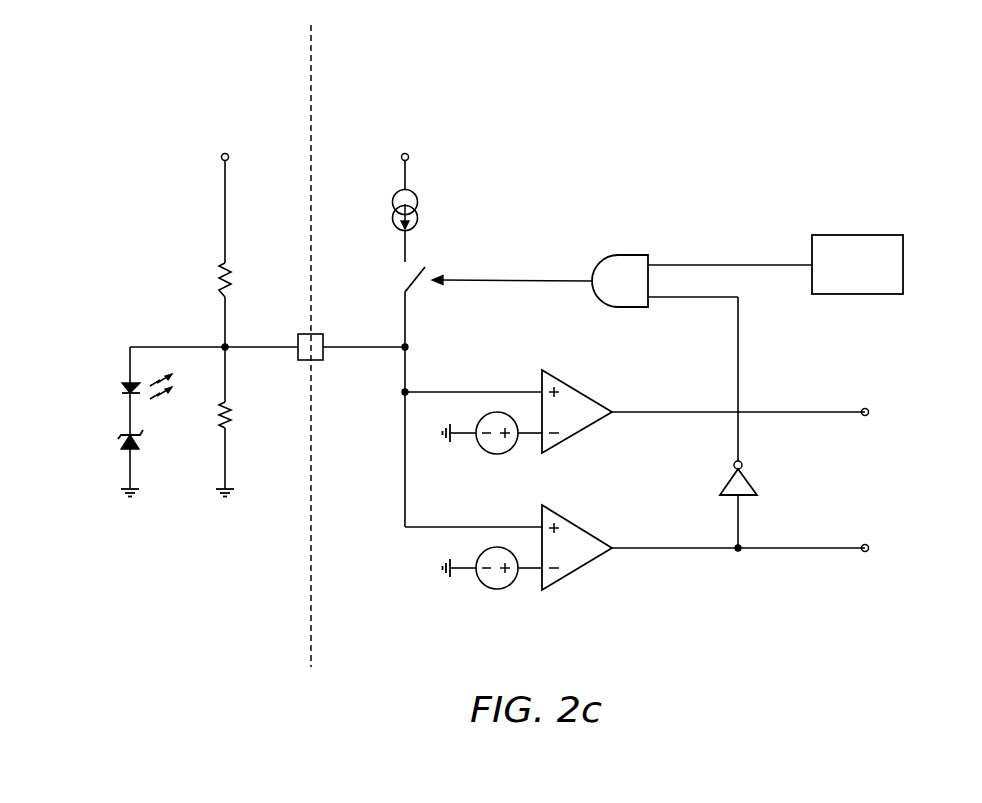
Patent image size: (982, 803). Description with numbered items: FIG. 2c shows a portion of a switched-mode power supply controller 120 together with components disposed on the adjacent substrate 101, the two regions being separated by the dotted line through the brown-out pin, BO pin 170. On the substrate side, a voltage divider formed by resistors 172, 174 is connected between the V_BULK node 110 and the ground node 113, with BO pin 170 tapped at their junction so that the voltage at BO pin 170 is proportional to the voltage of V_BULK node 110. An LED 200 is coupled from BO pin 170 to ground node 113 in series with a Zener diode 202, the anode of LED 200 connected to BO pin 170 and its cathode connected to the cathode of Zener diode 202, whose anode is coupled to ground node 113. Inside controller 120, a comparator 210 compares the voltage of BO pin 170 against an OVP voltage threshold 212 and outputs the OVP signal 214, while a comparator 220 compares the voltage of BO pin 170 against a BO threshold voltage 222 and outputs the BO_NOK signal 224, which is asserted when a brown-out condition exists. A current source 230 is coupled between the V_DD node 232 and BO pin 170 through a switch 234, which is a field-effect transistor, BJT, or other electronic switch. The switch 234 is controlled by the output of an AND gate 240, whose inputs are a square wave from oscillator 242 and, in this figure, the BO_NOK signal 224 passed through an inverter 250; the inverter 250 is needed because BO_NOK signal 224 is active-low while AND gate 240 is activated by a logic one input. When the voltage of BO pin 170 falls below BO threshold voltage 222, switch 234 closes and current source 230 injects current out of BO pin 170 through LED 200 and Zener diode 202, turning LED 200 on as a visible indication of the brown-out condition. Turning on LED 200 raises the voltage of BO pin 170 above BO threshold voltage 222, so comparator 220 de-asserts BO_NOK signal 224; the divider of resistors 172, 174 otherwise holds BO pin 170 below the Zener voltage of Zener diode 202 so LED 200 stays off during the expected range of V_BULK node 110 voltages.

The substrate 101 is at (257, 73).
The controller 120 is at (394, 73).
The V_BULK node 110 is at (221, 158).
The resistor 172 is at (221, 280).
The resistor 174 is at (230, 420).
The BO pin 170 is at (298, 334).
The LED 200 is at (120, 388).
The Zener diode 202 is at (122, 442).
The ground node 113 is at (130, 498).
The V_DD node 232 is at (408, 158).
The current source 230 is at (418, 222).
The switch 234 is at (403, 279).
The comparator 210 is at (578, 383).
The OVP voltage threshold 212 is at (497, 455).
The comparator 220 is at (578, 518).
The BO threshold voltage 222 is at (497, 590).
The OVP signal 214 is at (868, 409).
The BO_NOK signal 224 is at (868, 545).
The AND gate 240 is at (628, 253).
The oscillator 242 is at (858, 234).
The inverter 250 is at (745, 482).